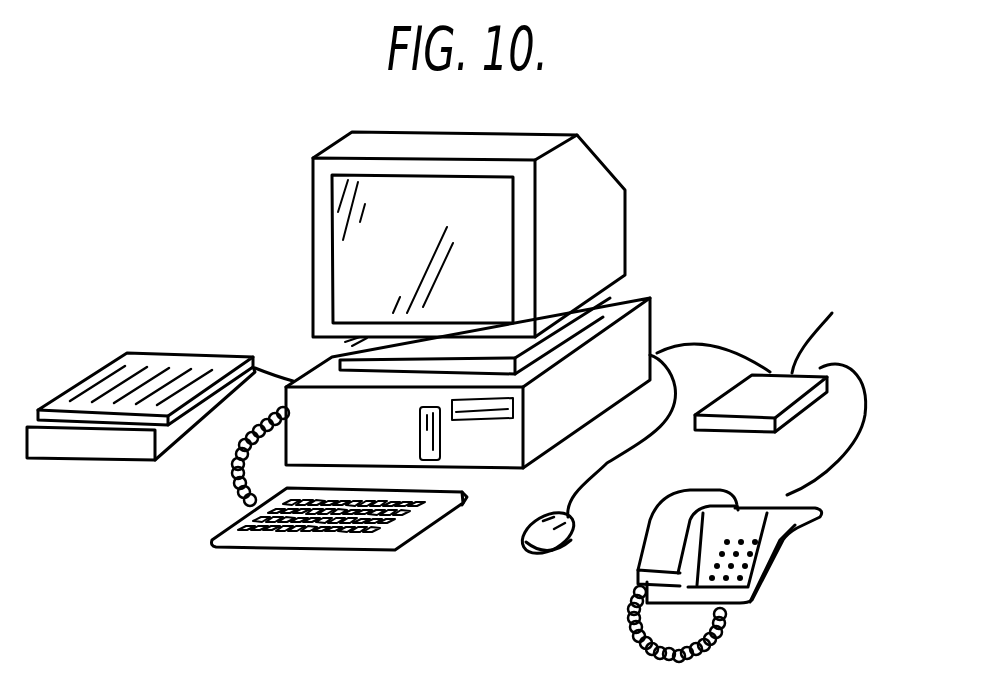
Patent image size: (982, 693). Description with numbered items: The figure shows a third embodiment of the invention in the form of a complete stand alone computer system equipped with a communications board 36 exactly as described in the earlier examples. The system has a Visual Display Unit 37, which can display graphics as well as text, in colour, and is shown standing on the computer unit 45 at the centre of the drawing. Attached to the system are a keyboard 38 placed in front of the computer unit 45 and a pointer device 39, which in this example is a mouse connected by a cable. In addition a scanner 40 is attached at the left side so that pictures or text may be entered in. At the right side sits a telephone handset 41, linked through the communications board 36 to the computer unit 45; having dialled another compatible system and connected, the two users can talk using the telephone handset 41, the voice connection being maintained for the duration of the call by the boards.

The communications board 36 is at (735, 433).
The Visual Display Unit 37 is at (360, 208).
The keyboard 38 is at (318, 550).
The pointer device 39 is at (535, 543).
The scanner 40 is at (90, 463).
The telephone handset 41 is at (780, 538).
The computer unit 45 is at (647, 337).